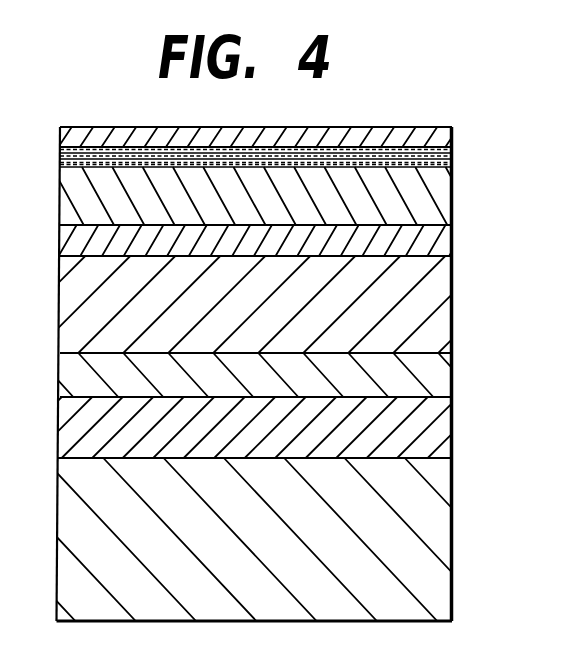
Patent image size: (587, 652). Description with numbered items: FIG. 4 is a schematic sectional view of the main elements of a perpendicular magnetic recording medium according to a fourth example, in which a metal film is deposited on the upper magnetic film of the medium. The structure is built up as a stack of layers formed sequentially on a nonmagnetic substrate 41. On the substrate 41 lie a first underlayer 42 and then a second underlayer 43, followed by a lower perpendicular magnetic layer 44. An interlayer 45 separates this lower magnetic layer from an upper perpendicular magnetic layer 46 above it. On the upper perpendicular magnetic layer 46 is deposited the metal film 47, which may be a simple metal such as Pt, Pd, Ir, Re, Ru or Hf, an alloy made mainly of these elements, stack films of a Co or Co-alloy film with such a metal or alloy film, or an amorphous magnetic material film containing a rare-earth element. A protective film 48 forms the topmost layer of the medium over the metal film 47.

The nonmagnetic substrate 41 is at (420, 507).
The first underlayer 42 is at (423, 417).
The second underlayer 43 is at (422, 377).
The lower perpendicular magnetic layer 44 is at (423, 285).
The interlayer 45 is at (438, 238).
The upper perpendicular magnetic layer 46 is at (437, 198).
The metal film 47 is at (459, 147).
The protective film 48 is at (433, 135).